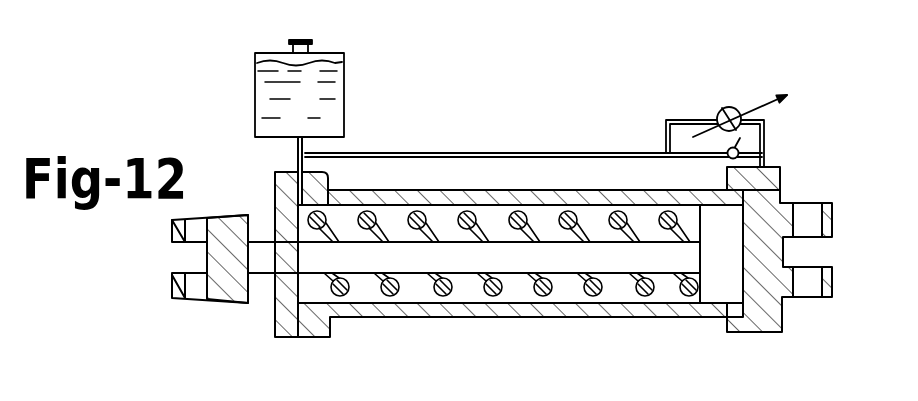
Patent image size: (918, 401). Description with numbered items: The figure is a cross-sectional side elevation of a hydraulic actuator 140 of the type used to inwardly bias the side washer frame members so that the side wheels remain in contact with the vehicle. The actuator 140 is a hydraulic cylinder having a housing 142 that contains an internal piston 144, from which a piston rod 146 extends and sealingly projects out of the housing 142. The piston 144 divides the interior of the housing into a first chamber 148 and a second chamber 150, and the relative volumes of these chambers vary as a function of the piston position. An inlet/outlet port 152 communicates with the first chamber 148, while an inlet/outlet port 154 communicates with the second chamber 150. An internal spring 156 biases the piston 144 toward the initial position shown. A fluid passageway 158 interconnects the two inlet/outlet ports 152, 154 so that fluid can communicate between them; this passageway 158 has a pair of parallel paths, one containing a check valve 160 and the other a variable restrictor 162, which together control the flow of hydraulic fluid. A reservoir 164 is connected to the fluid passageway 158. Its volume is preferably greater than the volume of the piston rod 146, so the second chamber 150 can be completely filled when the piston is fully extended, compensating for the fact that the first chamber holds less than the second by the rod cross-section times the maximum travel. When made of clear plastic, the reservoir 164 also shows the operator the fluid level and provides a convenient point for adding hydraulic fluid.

The actuator 140 is at (530, 86).
The housing 142 is at (343, 320).
The piston 144 is at (717, 272).
The piston rod 146 is at (261, 263).
The first chamber 148 is at (430, 290).
The second chamber 150 is at (748, 292).
The inlet/outlet port 152 is at (292, 170).
The inlet/outlet port 154 is at (746, 205).
The internal spring 156 is at (627, 292).
The fluid passageway 158 is at (358, 153).
The check valve 160 is at (727, 155).
The variable restrictor 162 is at (722, 112).
The reservoir 164 is at (347, 87).